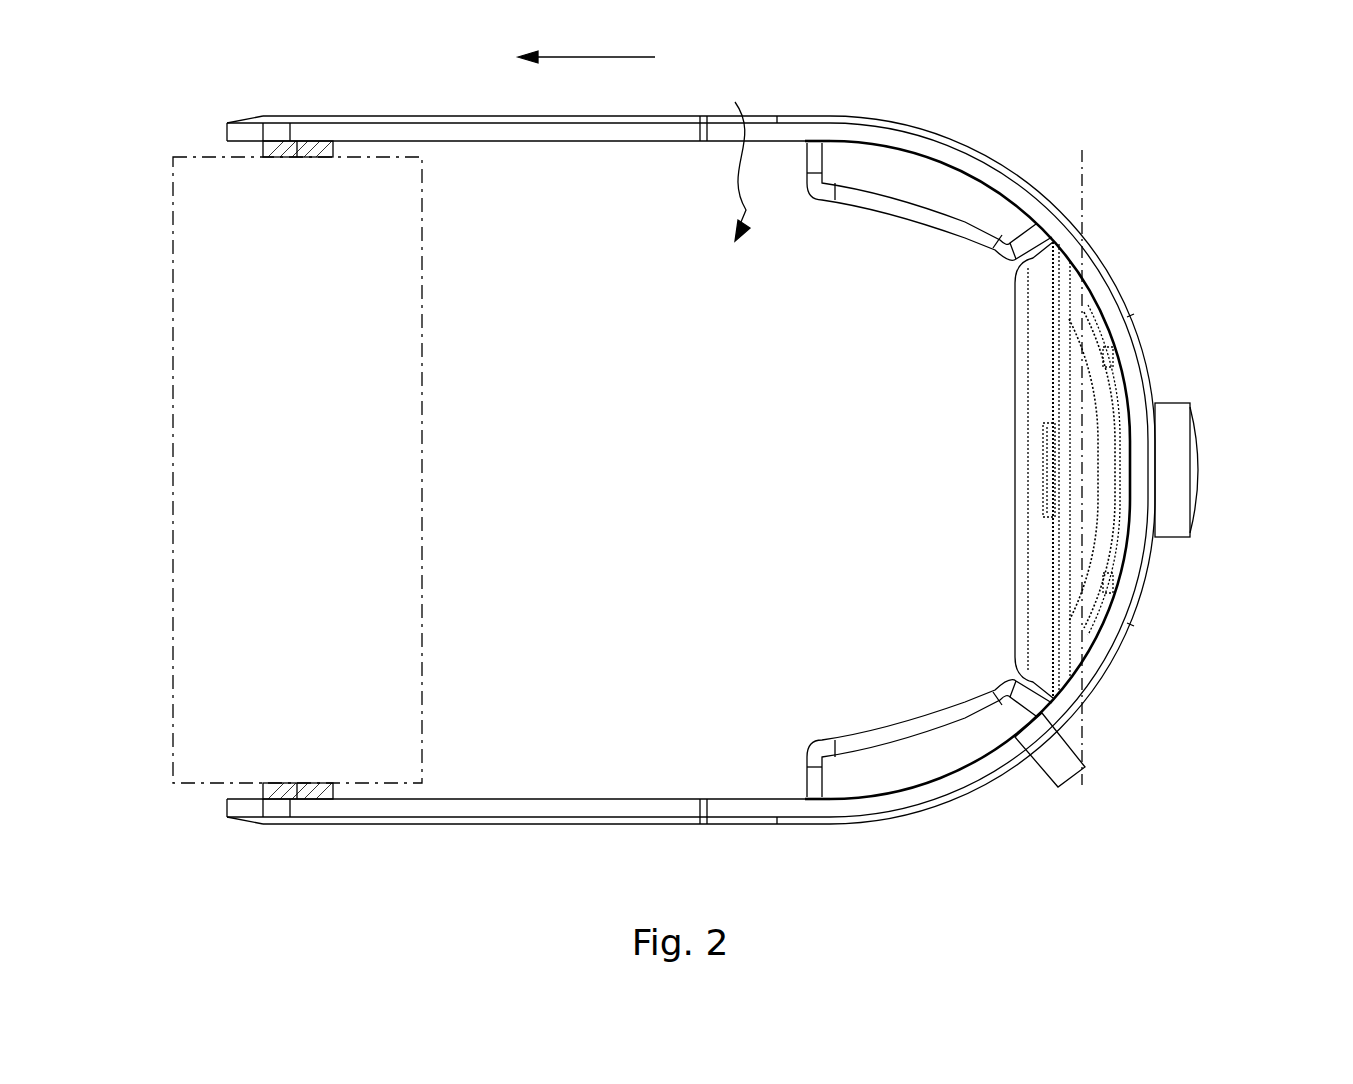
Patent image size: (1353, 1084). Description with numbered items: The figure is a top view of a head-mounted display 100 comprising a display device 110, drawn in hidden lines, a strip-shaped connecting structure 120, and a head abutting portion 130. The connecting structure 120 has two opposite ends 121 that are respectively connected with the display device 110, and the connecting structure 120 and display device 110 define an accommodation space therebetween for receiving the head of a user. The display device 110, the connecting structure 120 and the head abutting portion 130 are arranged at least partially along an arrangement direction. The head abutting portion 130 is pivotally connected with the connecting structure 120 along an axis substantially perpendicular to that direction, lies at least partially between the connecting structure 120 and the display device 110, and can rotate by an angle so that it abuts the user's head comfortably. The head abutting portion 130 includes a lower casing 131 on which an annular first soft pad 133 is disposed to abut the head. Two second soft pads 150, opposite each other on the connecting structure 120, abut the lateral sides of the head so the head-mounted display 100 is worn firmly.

The head-mounted display 100 is at (1330, 67).
The display device 110 is at (178, 652).
The connecting structure 120 is at (748, 802).
The ends 121 is at (318, 134).
The head abutting portion 130 is at (1154, 470).
The lower casing 131 is at (1088, 552).
The first soft pad 133 is at (1045, 610).
The second soft pads 150 is at (876, 166).